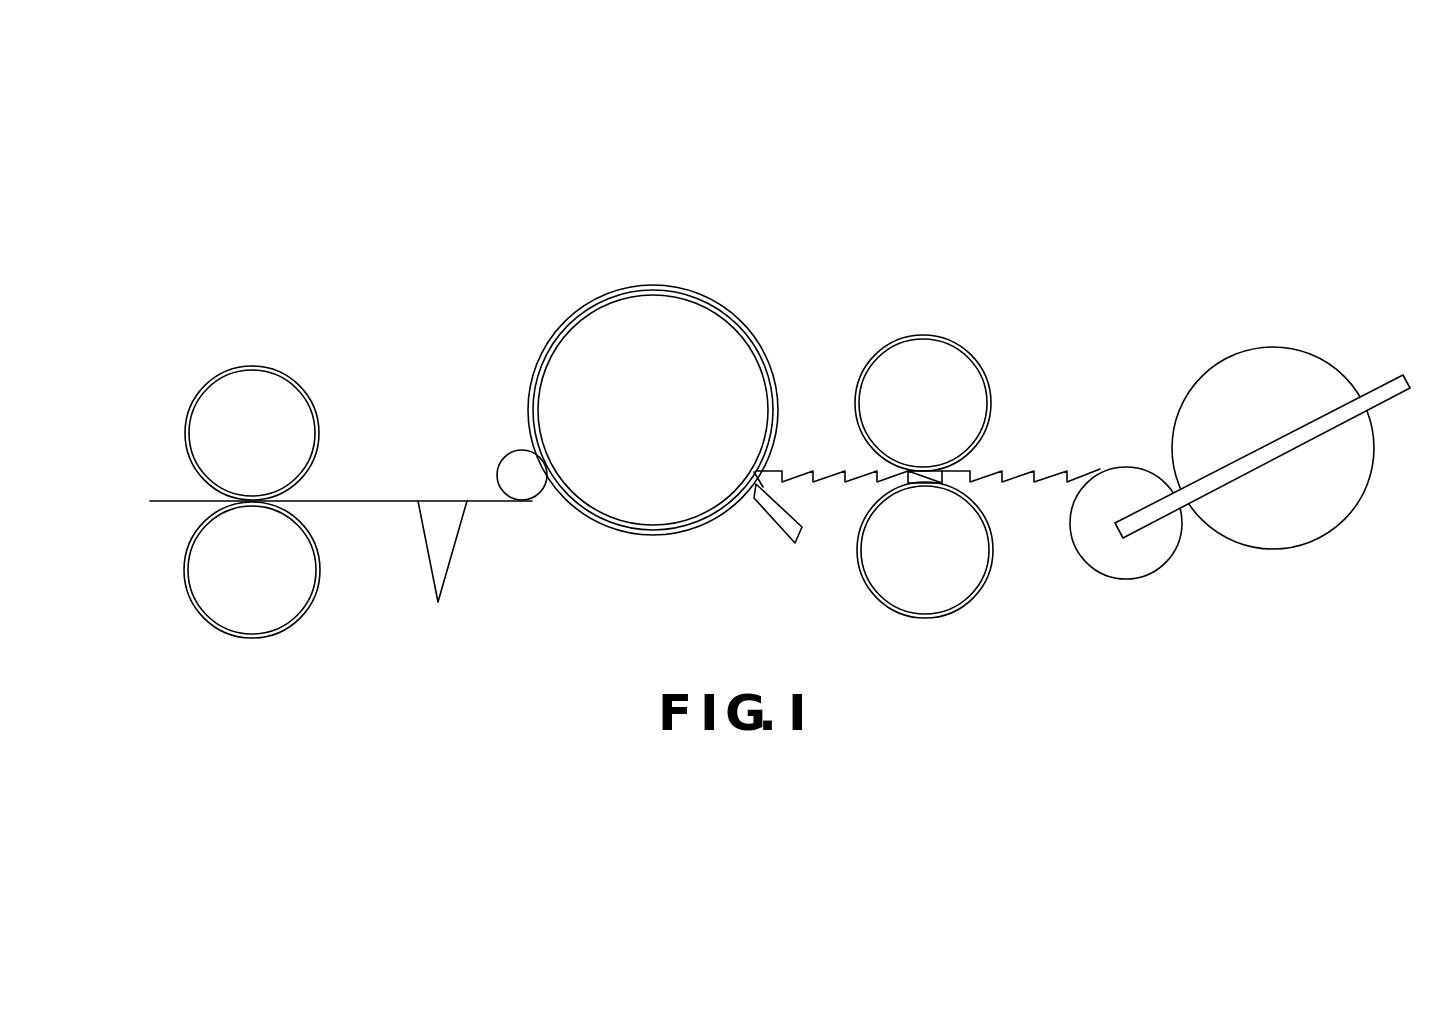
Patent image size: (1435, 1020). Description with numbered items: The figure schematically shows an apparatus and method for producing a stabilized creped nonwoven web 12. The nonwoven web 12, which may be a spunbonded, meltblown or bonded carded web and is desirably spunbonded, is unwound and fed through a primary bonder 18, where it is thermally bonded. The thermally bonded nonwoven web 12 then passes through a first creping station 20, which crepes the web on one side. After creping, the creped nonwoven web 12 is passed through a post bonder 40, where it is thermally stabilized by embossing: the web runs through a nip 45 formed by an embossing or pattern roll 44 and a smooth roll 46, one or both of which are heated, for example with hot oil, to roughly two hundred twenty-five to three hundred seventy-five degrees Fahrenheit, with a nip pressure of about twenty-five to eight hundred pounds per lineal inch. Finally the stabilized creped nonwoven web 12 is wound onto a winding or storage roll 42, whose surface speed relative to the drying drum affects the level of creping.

The nonwoven web 12 is at (333, 500).
The primary bonder 18 is at (272, 387).
The first creping station 20 is at (621, 283).
The post bonder 40 is at (939, 475).
The storage roll 42 is at (1258, 362).
The pattern roll 44 is at (975, 416).
The nip 45 is at (901, 471).
The smooth roll 46 is at (873, 566).